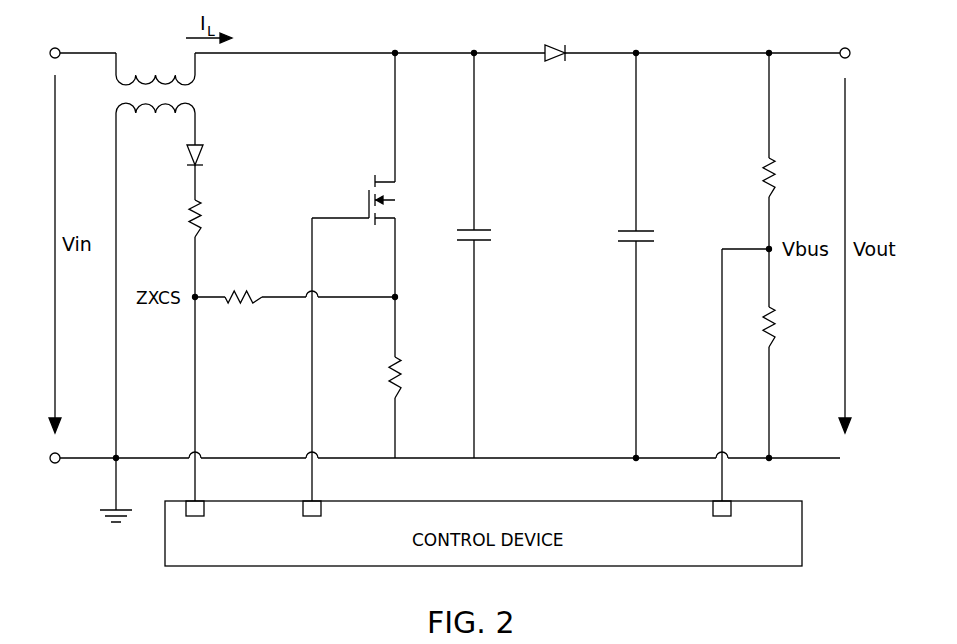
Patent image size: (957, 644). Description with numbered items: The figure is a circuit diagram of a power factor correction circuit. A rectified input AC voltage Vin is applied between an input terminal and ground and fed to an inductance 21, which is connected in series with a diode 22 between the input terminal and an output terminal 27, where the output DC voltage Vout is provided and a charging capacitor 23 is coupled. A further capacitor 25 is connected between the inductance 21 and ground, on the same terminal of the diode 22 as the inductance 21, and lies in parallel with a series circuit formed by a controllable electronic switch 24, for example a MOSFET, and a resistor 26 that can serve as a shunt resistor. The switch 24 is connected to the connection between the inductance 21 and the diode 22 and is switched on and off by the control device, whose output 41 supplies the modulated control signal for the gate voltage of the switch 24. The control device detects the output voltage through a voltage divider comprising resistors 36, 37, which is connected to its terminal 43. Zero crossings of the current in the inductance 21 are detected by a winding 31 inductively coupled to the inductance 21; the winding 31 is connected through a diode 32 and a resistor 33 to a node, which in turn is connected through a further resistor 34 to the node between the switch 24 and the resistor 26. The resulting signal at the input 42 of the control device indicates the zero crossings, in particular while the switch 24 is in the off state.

The inductance 21 is at (166, 66).
The diode 22 is at (563, 47).
The charging capacitor 23 is at (665, 216).
The switch 24 is at (362, 180).
The further capacitor 25 is at (507, 212).
The resistor 26 is at (400, 361).
The output terminal 27 is at (850, 46).
The winding 31 is at (145, 125).
The diode 32 is at (200, 152).
The resistor 33 is at (200, 203).
The further resistor 34 is at (230, 296).
The resistor 36 is at (774, 160).
The resistor 37 is at (774, 310).
The output 41 is at (313, 516).
The input 42 is at (196, 516).
The control device terminal 43 is at (723, 516).